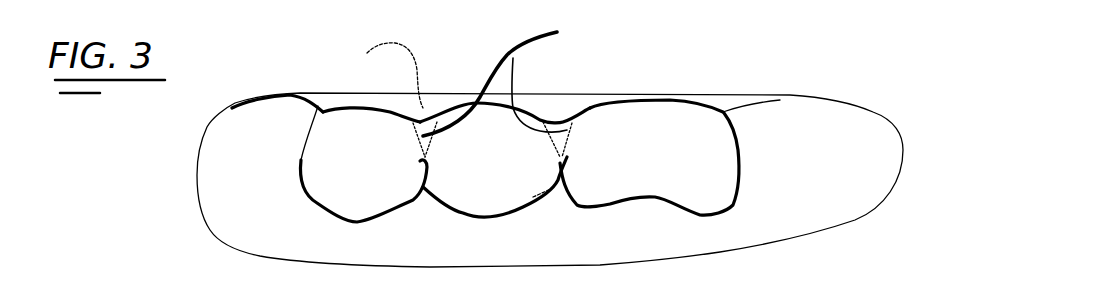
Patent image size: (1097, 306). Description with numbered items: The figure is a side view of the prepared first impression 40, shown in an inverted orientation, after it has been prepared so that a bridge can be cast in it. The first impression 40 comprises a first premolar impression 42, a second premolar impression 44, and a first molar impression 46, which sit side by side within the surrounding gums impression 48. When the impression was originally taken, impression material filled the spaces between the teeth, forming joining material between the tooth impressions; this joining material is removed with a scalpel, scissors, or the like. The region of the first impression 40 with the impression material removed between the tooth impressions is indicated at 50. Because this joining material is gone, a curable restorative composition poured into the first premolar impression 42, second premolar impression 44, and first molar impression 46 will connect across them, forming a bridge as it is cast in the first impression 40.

The first impression 40 is at (838, 140).
The first premolar impression 42 is at (372, 178).
The second premolar impression 44 is at (497, 181).
The first molar impression 46 is at (667, 172).
The gums impression 48 is at (318, 107).
The impression material removed between the tooth impressions 50 is at (516, 69).